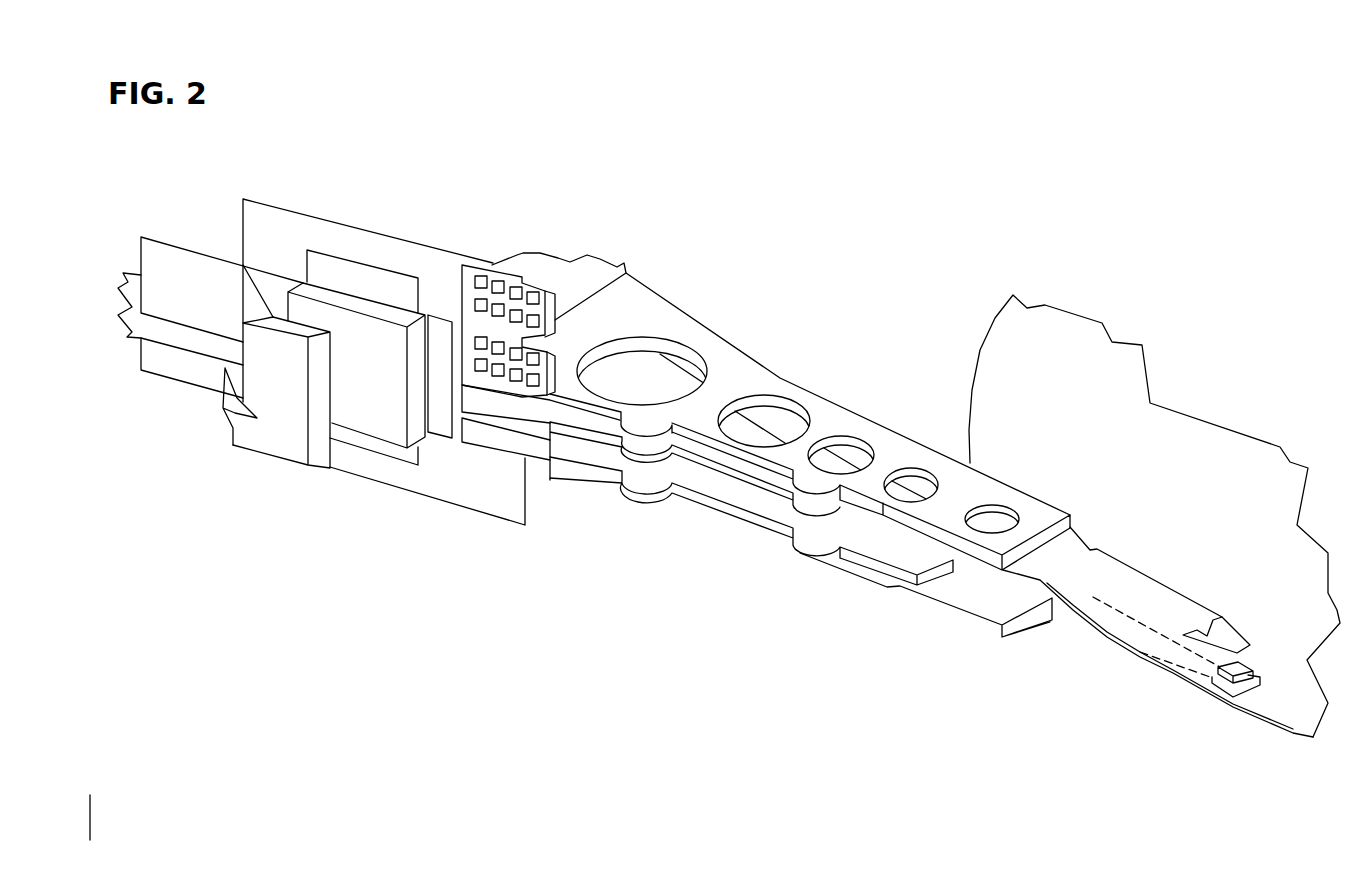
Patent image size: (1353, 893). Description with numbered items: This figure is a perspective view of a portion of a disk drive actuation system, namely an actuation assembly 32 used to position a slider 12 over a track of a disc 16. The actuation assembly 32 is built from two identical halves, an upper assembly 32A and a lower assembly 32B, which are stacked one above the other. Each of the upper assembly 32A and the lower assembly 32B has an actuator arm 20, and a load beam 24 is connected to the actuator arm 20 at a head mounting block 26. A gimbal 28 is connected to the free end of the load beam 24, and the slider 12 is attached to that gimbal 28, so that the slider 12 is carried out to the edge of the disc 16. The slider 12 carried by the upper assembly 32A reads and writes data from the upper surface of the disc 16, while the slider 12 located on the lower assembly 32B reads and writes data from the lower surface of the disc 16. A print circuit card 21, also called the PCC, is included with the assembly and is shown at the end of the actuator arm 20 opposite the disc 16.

The slider 12 is at (1233, 673).
The disc 16 is at (1108, 370).
The actuator arm 20 is at (707, 347).
The print circuit card 21 is at (460, 274).
The load beam 24 is at (1098, 551).
The head mounting block 26 is at (953, 583).
The gimbal 28 is at (1227, 617).
The actuation assembly 32 is at (781, 419).
The upper assembly 32A is at (810, 446).
The lower assembly 32B is at (771, 514).